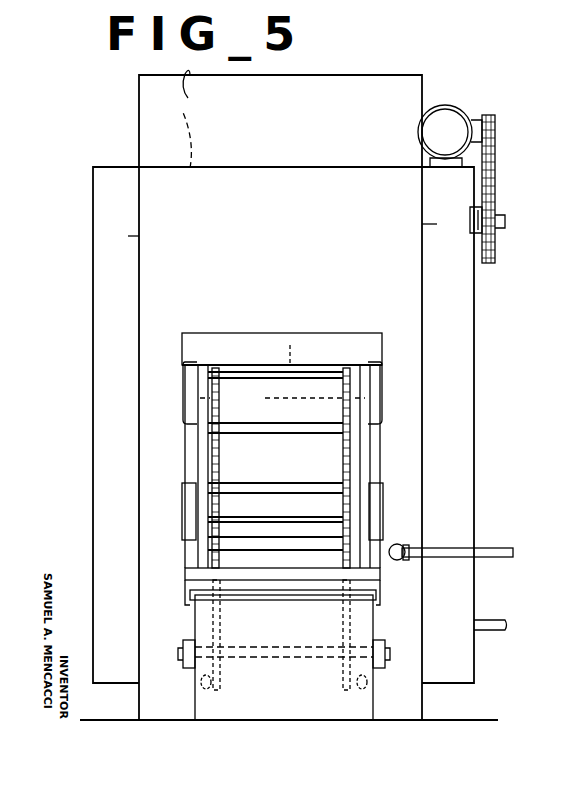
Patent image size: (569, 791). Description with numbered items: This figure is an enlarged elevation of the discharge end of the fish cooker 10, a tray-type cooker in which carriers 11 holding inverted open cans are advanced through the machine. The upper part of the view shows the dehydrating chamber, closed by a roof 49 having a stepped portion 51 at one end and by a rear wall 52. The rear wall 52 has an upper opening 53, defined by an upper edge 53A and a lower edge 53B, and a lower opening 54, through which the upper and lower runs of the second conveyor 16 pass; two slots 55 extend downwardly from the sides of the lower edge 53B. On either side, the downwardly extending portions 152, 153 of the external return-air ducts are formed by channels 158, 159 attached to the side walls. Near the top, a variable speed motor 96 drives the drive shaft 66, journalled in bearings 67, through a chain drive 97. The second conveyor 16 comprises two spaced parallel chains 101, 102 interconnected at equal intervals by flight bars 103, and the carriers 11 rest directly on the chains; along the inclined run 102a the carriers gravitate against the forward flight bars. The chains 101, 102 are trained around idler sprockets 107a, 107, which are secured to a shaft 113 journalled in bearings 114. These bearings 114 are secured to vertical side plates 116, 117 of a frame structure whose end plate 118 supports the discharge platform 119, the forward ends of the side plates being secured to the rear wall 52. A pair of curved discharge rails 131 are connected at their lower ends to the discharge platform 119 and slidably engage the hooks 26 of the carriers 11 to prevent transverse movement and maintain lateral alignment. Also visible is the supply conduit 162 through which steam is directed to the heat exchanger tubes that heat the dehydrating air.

The fish cooker 10 is at (118, 92).
The roof 49 is at (182, 119).
The stepped portion 51 is at (286, 112).
The rear wall 52 is at (285, 204).
The downwardly extending portion 152 is at (139, 236).
The downwardly extending portion 153 is at (422, 225).
The channel 158 is at (103, 342).
The channel 159 is at (462, 410).
The variable speed motor 96 is at (460, 141).
The chain drive 97 is at (494, 168).
The bearings 67 is at (496, 212).
The drive shaft 66 is at (505, 222).
The upper opening 53 is at (372, 345).
The upper edge 53A is at (318, 345).
The lower edge 53B is at (290, 372).
The second conveyor 16 is at (262, 375).
The chain 101 is at (205, 398).
The chain 102 is at (343, 406).
The inclined run 102a is at (352, 455).
The flight bars 103 is at (250, 490).
The curved discharge rails 131 is at (212, 452).
The slots 55 is at (185, 398).
The lower opening 54 is at (185, 534).
The discharge platform 119 is at (380, 588).
The carriers 11 is at (185, 574).
The hooks 26 is at (186, 606).
The end plate 118 is at (287, 704).
The shaft 113 is at (300, 646).
The bearings 114 is at (188, 640).
The idler sprocket 107 is at (340, 664).
The idler sprocket 107a is at (228, 662).
The vertical side plate 116 is at (200, 686).
The vertical side plate 117 is at (372, 684).
The supply conduit 162 is at (403, 545).